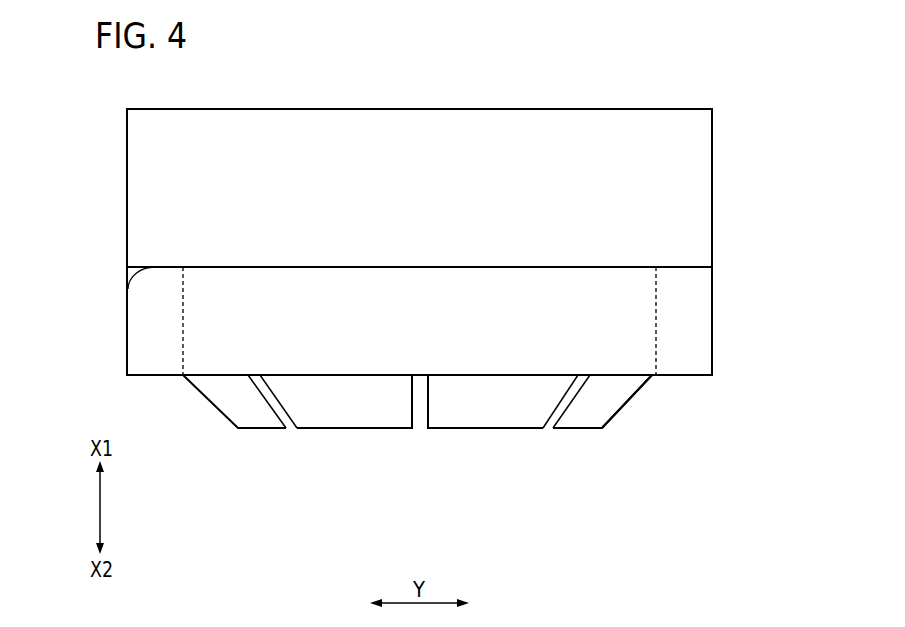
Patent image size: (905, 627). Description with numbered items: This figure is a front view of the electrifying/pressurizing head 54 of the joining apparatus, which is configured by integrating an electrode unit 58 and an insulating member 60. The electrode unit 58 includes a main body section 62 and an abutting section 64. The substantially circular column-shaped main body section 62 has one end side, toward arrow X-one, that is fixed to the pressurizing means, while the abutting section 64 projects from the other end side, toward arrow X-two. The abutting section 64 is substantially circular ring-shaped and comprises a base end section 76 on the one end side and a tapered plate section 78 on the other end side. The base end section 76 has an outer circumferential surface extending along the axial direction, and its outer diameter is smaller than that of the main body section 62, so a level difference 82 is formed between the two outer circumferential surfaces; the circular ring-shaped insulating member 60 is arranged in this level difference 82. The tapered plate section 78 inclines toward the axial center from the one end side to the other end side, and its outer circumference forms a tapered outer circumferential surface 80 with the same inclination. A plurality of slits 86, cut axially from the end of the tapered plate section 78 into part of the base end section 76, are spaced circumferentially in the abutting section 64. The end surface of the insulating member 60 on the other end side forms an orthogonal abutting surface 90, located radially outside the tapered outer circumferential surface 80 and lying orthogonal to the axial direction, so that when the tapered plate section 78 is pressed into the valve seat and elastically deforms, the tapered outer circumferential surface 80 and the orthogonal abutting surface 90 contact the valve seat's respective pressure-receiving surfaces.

The electrifying/pressurizing head 54 is at (694, 58).
The electrode unit 58 is at (716, 147).
The main body section 62 is at (702, 199).
The insulating member 60 is at (697, 314).
The level difference 82 is at (128, 289).
The base end section 76 is at (183, 328).
The abutting section 64 is at (335, 442).
The tapered plate section 78 is at (470, 417).
The slits 86 is at (565, 402).
The tapered outer circumferential surface 80 is at (617, 402).
The orthogonal abutting surface 90 is at (687, 376).